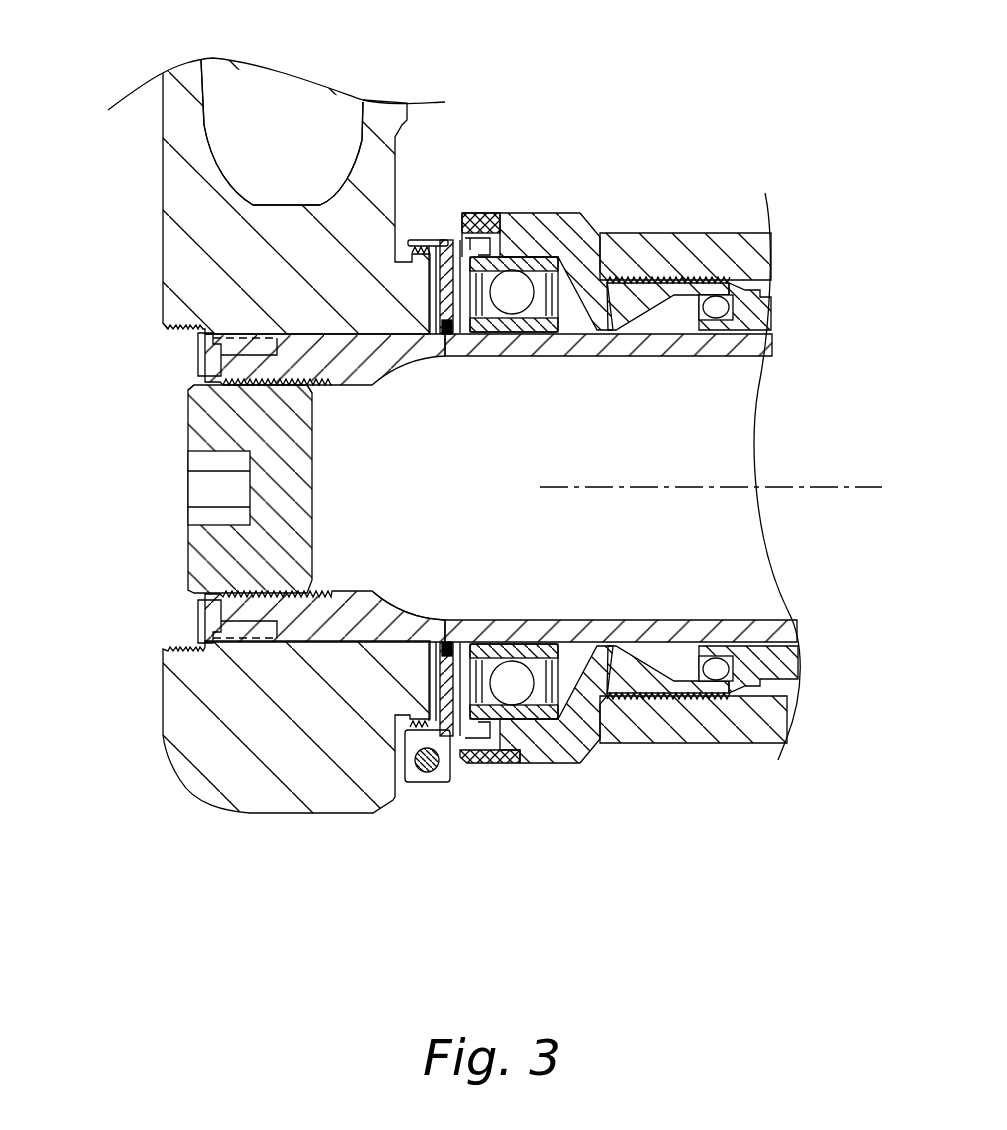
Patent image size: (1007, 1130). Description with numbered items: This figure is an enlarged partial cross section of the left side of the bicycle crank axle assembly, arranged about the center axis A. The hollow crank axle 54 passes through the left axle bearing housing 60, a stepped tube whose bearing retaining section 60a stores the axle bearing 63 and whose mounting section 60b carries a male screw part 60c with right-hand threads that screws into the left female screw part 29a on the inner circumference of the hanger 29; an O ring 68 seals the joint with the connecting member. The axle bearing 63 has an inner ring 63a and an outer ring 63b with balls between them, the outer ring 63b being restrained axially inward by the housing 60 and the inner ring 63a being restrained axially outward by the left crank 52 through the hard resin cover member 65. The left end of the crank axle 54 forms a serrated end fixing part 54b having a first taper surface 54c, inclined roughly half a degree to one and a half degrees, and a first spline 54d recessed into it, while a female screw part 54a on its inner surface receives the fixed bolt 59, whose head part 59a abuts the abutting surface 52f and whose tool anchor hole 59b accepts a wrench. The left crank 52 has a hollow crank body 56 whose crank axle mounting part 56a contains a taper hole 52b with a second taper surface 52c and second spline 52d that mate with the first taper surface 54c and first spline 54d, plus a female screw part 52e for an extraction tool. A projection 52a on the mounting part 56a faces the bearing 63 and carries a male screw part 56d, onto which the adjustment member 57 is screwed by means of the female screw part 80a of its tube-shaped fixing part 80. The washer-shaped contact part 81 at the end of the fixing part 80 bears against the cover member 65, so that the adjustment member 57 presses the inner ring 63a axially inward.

The hanger 29 is at (770, 746).
The left female screw part 29a is at (700, 692).
The left crank 52 is at (431, 122).
The projection 52a is at (333, 200).
The taper hole 52b is at (305, 386).
The second taper surface 52c is at (313, 384).
The second spline 52d is at (184, 352).
The female screw part 52e is at (178, 337).
The abutting surface 52f is at (204, 628).
The crank axle 54 is at (413, 658).
The female screw part 54a is at (324, 390).
The end fixing part 54b is at (290, 328).
The first taper surface 54c is at (340, 660).
The first spline 54d is at (168, 650).
The left crank body 56 is at (411, 197).
The crank axle mounting part 56a is at (238, 790).
The male screw part 56d is at (393, 787).
The adjustment member 57 is at (432, 791).
The fixed bolt 59 is at (177, 566).
The head part 59a is at (192, 344).
The tool anchor hole 59b is at (215, 462).
The left axle bearing housing 60 is at (559, 196).
The bearing retaining section 60a is at (490, 748).
The mounting section 60b is at (637, 680).
The male screw part 60c is at (663, 272).
The axle bearing 63 is at (544, 242).
The inner ring 63a is at (552, 720).
The outer ring 63b is at (545, 705).
The cover member 65 is at (445, 300).
The O ring 68 is at (714, 657).
The tube-shaped fixing part 80 is at (450, 318).
The female screw part 80a is at (400, 713).
The contact part 81 is at (468, 252).
The center axis A is at (784, 487).